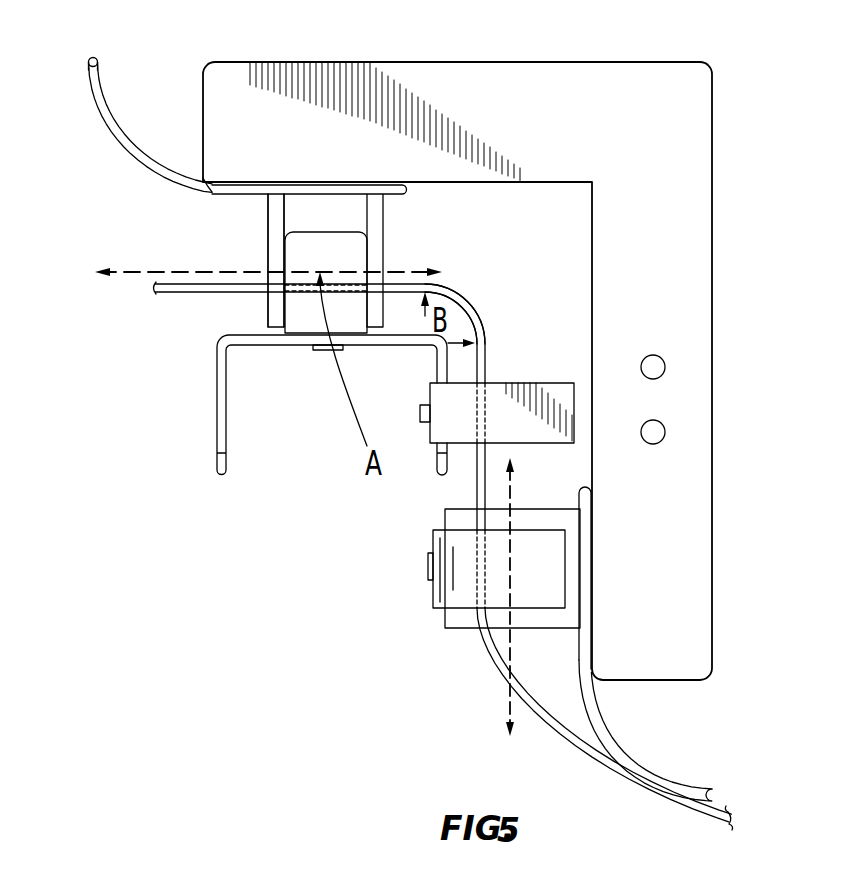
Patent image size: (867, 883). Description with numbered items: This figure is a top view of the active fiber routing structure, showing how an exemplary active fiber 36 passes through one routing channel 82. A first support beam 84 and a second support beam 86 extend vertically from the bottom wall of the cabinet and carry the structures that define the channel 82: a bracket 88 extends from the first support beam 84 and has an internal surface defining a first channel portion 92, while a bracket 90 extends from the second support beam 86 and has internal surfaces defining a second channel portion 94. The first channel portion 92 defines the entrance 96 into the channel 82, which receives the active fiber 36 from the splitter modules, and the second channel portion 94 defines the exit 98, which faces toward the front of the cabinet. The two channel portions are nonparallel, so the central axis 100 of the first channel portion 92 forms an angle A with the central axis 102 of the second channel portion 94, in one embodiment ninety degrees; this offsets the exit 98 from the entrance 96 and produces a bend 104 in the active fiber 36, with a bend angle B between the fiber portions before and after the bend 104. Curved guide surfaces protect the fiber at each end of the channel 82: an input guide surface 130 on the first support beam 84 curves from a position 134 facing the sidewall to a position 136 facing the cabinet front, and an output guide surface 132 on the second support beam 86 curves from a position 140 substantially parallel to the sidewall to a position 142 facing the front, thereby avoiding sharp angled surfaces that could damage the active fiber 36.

The active fiber 36 is at (163, 293).
The channel 82 is at (545, 314).
The first support beam 84 is at (318, 188).
The second support beam 86 is at (585, 533).
The bracket 88 is at (368, 208).
The bracket 90 is at (570, 607).
The first channel portion 92 is at (252, 255).
The second channel portion 94 is at (518, 632).
The entrance 96 is at (270, 308).
The exit 98 is at (538, 632).
The central axis 100 is at (397, 270).
The central axis 102 is at (512, 705).
The bend 104 is at (470, 297).
The input guide surface 130 is at (107, 97).
The output guide surface 132 is at (667, 788).
The position 134 is at (90, 70).
The position 136 is at (208, 178).
The position 140 is at (590, 663).
The position 142 is at (703, 802).